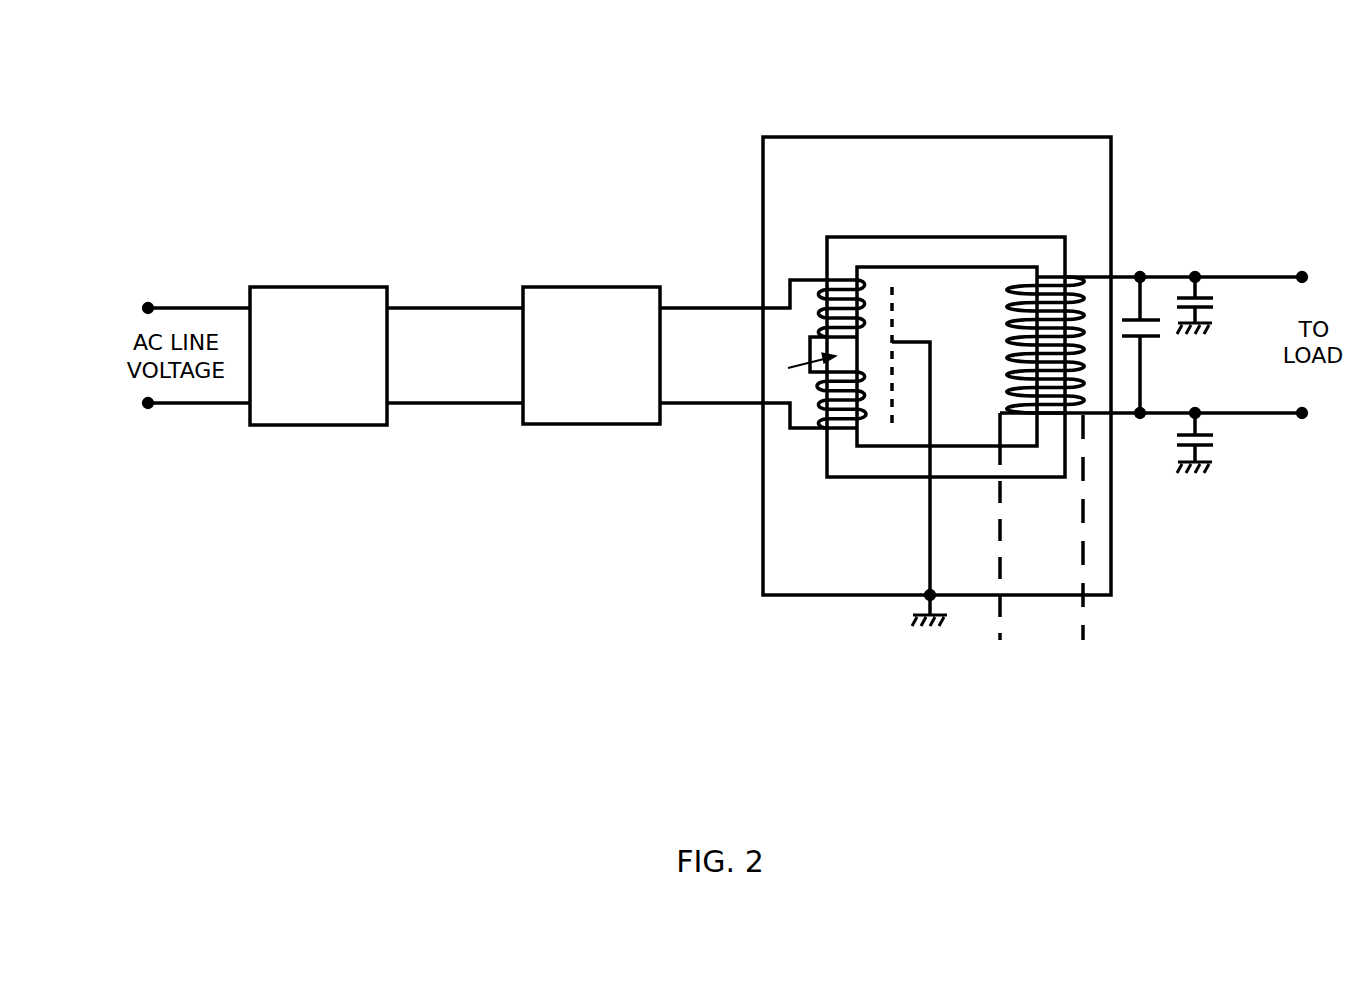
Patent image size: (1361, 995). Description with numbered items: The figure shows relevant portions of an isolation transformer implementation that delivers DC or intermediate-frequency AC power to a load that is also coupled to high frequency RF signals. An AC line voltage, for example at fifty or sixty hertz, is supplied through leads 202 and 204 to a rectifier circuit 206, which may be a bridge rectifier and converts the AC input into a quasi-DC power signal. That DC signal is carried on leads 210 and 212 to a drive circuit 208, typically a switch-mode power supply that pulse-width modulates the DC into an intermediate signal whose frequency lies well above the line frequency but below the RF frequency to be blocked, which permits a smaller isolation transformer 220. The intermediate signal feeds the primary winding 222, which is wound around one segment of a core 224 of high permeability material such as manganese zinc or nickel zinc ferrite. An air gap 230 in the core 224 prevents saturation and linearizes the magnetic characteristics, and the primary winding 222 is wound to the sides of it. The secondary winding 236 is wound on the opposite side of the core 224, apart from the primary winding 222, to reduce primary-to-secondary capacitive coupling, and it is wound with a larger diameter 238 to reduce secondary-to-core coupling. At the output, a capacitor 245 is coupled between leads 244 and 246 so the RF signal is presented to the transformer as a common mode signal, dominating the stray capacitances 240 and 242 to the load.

The lead 202 is at (198, 307).
The lead 204 is at (200, 405).
The rectifier circuit 206 is at (320, 287).
The drive circuit 208 is at (577, 287).
The lead 210 is at (435, 307).
The lead 212 is at (420, 405).
The isolation transformer 220 is at (900, 137).
The primary winding 222 is at (807, 432).
The core 224 is at (1042, 255).
The air gap 230 is at (801, 375).
The secondary winding 236 is at (1020, 413).
The larger diameter 238 is at (957, 635).
The stray capacitance 240 is at (1215, 310).
The stray capacitance 242 is at (1215, 445).
The lead 244 is at (1237, 275).
The capacitor 245 is at (1147, 338).
The lead 246 is at (1280, 415).